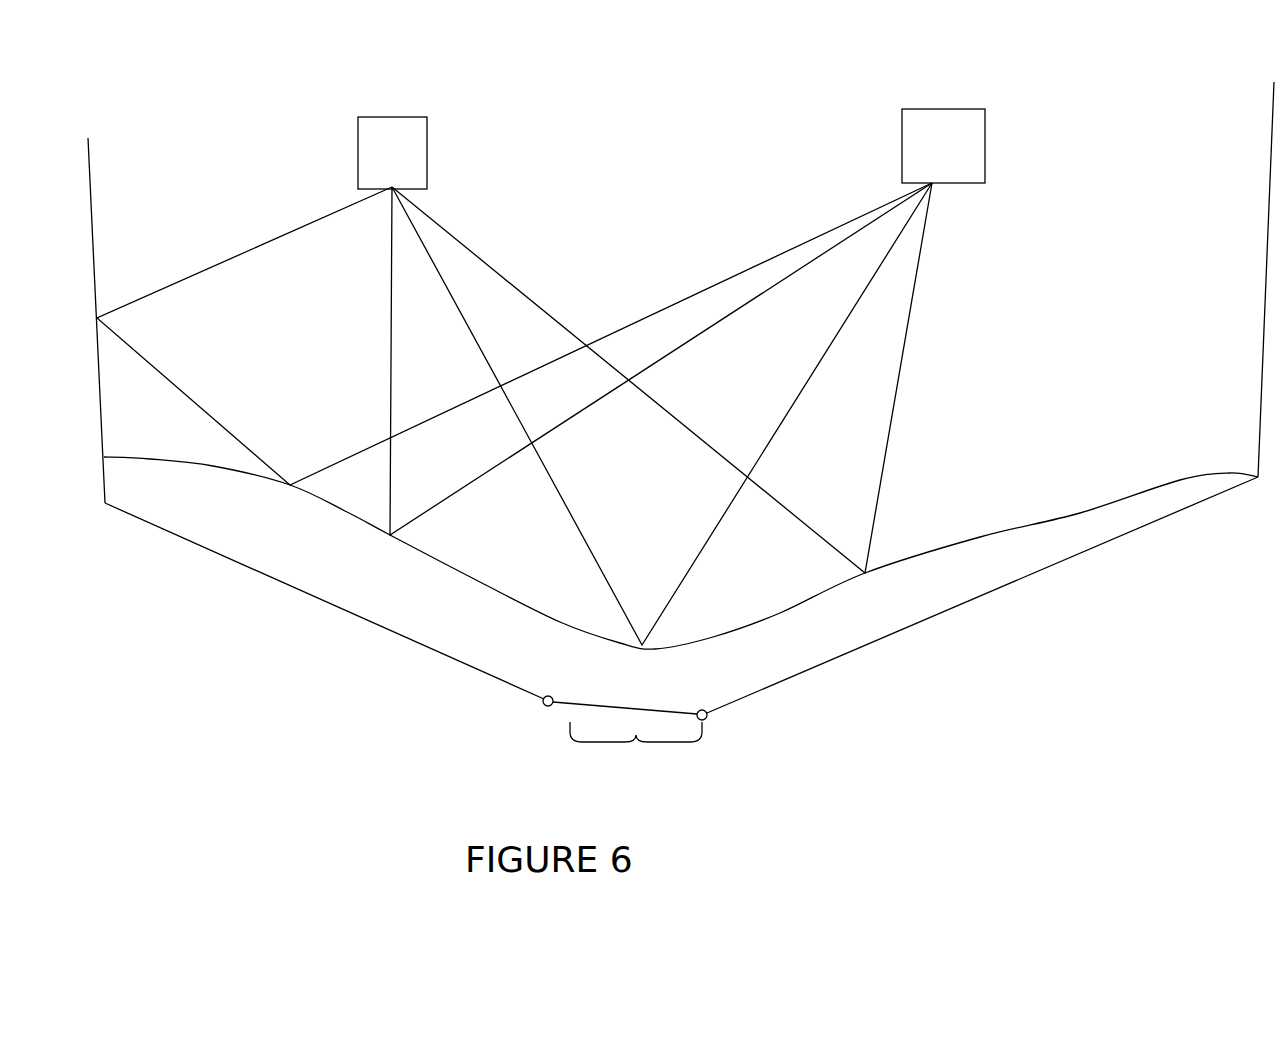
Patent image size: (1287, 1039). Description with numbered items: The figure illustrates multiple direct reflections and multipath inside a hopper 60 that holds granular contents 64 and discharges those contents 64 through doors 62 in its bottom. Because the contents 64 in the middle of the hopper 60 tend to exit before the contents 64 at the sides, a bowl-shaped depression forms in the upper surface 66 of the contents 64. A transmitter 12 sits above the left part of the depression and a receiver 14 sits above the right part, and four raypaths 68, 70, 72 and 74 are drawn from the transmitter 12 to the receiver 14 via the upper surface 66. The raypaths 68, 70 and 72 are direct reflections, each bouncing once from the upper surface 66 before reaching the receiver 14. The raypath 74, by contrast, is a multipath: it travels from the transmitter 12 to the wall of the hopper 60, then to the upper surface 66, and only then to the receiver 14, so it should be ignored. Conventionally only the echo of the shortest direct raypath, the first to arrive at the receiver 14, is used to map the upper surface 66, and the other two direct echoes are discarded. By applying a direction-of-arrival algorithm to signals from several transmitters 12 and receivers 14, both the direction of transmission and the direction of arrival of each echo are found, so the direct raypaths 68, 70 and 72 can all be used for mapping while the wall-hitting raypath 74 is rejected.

The transmitter 12 is at (375, 177).
The receiver 14 is at (918, 171).
The hopper 60 is at (92, 183).
The doors 62 is at (636, 750).
The granular contents 64 is at (703, 679).
The upper surface 66 is at (1130, 489).
The raypath 68 is at (390, 320).
The raypath 70 is at (584, 542).
The raypath 72 is at (514, 287).
The raypath 74 is at (247, 251).